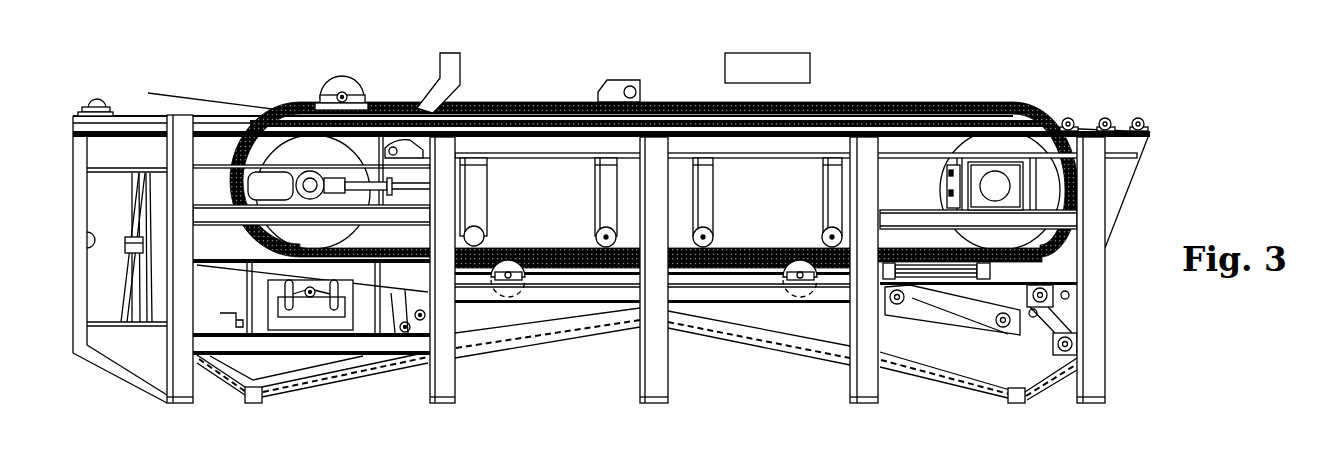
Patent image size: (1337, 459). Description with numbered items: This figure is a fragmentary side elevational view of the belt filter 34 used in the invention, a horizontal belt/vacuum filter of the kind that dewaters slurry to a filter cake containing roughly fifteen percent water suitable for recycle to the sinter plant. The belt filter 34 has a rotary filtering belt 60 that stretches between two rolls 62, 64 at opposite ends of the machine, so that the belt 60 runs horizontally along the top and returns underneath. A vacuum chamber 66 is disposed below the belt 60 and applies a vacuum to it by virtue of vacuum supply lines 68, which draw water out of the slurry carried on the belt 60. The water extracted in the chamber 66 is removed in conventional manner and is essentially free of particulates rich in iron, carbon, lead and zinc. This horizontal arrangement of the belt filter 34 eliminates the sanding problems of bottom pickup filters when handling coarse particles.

The belt filter 34 is at (1046, 93).
The rotary filtering belt 60 is at (900, 102).
The roll 62 is at (288, 196).
The roll 64 is at (980, 185).
The vacuum chamber 66 is at (583, 147).
The vacuum supply lines 68 is at (600, 208).